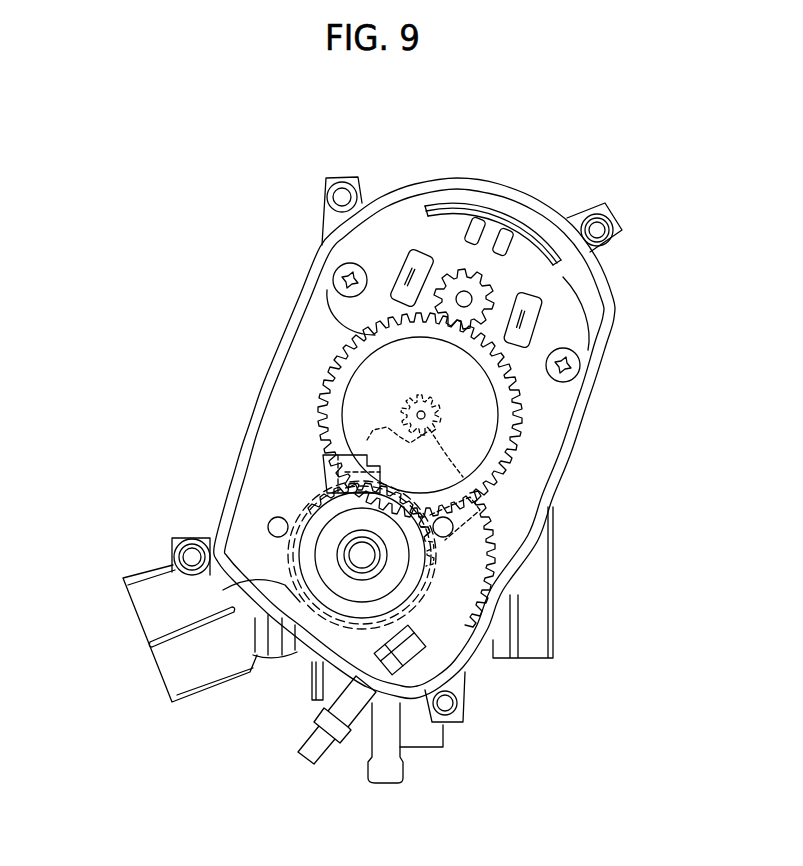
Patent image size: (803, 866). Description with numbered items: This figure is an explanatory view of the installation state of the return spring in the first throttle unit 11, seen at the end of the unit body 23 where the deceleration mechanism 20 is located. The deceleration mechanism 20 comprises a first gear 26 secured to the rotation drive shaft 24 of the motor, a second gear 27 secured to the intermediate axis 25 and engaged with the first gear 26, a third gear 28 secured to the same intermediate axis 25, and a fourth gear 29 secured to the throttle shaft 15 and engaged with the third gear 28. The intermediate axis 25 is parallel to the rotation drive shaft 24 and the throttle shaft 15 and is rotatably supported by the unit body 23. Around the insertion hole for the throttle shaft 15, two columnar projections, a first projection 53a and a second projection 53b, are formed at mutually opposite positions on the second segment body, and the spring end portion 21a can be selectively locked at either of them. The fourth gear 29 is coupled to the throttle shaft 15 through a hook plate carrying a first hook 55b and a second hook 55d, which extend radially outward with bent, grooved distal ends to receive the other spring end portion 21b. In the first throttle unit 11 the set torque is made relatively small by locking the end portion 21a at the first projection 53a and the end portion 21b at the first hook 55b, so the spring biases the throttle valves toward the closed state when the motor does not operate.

The first throttle unit 11 is at (561, 677).
The throttle shaft 15 is at (366, 559).
The deceleration mechanism 20 is at (283, 262).
The end portion of the return spring 21a is at (493, 540).
The end portion of the return spring 21b is at (328, 463).
The unit body 23 is at (548, 432).
The rotation drive shaft 24 is at (497, 285).
The intermediate axis 25 is at (417, 411).
The first gear 26 is at (466, 293).
The second gear 27 is at (522, 420).
The third gear 28 is at (455, 432).
The fourth gear 29 is at (500, 547).
The first projection 53a is at (477, 507).
The second projection 53b is at (268, 525).
The first hook 55b is at (330, 480).
The second hook 55d is at (222, 585).